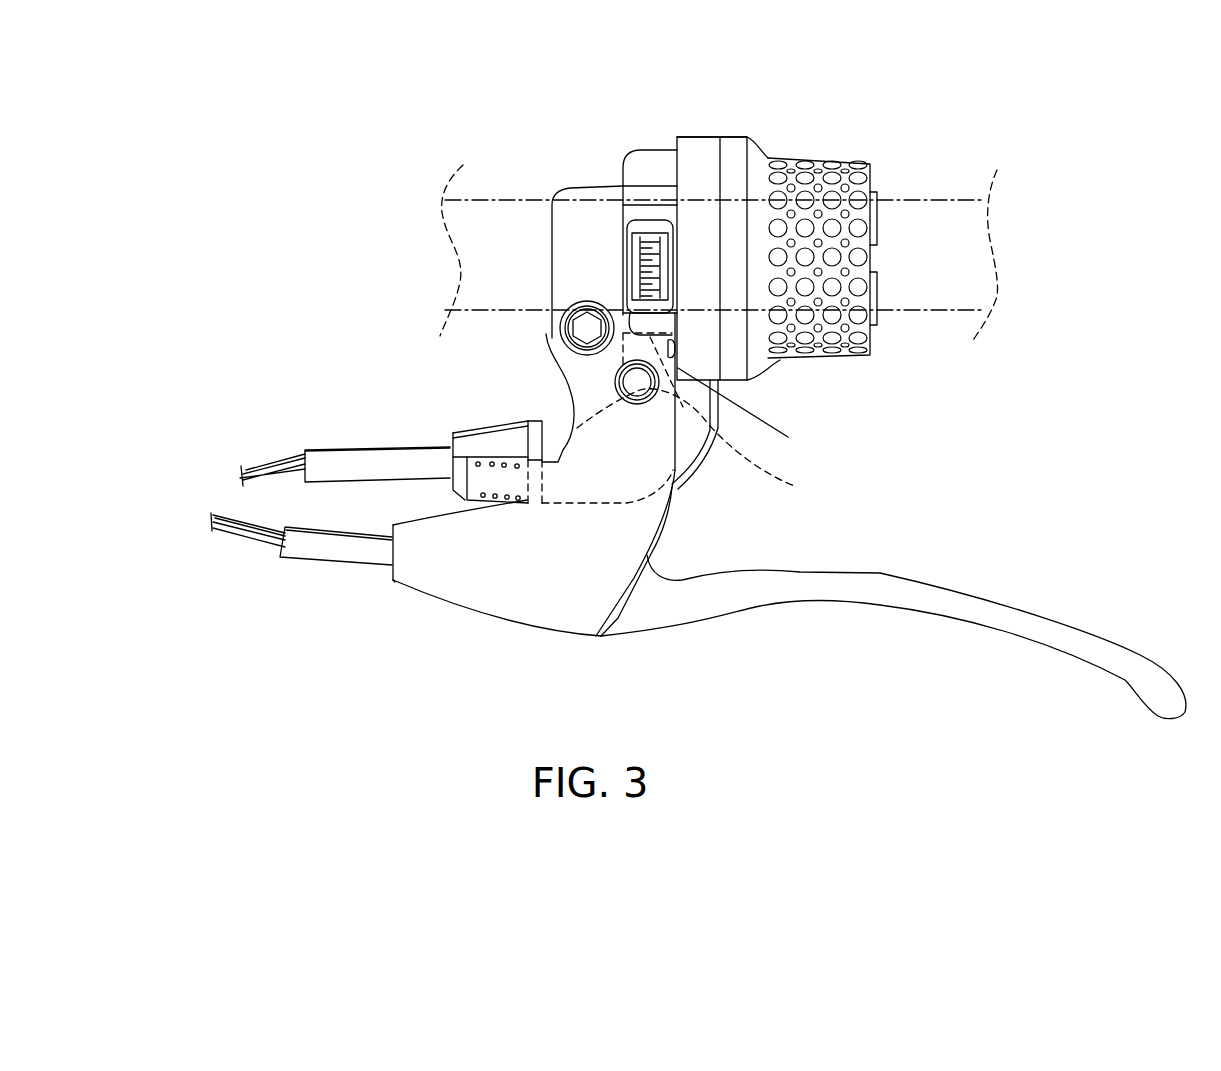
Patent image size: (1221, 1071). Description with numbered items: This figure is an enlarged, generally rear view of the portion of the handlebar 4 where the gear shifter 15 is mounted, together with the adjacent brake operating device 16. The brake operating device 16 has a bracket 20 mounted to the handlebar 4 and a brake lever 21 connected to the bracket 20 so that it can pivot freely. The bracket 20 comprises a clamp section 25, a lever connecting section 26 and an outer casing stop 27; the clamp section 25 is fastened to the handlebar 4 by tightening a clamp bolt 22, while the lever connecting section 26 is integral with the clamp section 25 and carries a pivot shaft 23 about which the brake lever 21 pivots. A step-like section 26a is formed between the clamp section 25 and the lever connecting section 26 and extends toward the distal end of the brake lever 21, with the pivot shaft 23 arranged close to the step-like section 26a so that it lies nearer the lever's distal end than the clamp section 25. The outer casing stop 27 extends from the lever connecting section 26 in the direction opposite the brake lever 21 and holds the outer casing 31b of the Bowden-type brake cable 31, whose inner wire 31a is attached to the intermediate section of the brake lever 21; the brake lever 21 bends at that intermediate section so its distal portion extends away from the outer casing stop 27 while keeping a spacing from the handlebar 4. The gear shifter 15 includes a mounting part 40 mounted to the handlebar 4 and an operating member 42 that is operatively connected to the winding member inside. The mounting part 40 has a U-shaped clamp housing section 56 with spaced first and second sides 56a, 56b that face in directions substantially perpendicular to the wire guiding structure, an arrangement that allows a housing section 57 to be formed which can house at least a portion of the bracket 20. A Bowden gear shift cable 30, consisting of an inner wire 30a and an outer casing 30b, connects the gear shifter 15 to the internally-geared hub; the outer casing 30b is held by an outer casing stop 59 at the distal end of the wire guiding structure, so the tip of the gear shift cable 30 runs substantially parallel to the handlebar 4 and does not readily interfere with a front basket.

The handlebar 4 is at (908, 203).
The gear shifter 15 is at (683, 105).
The brake operating device 16 is at (563, 178).
The bracket 20 is at (522, 642).
The brake lever 21 is at (747, 632).
The clamp bolt 22 is at (583, 330).
The pivot shaft 23 is at (637, 386).
The clamp section 25 is at (562, 287).
The lever connecting section 26 is at (652, 477).
The step-like section 26a is at (677, 313).
The outer casing stop 27 is at (415, 588).
The Bowden gear shift cable 30 is at (344, 432).
The inner wire 30a is at (265, 462).
The outer casing 30b is at (380, 455).
The Bowden-type brake cable 31 is at (348, 596).
The inner wire 31a is at (250, 545).
The outer casing 31b is at (305, 575).
The mounting part 40 is at (697, 137).
The operating member 42 is at (787, 160).
The U-shaped clamp housing section 56 is at (632, 152).
The first side 56a is at (641, 172).
The second side 56b is at (715, 417).
The housing section 57 is at (753, 410).
The outer casing stop 59 is at (453, 438).